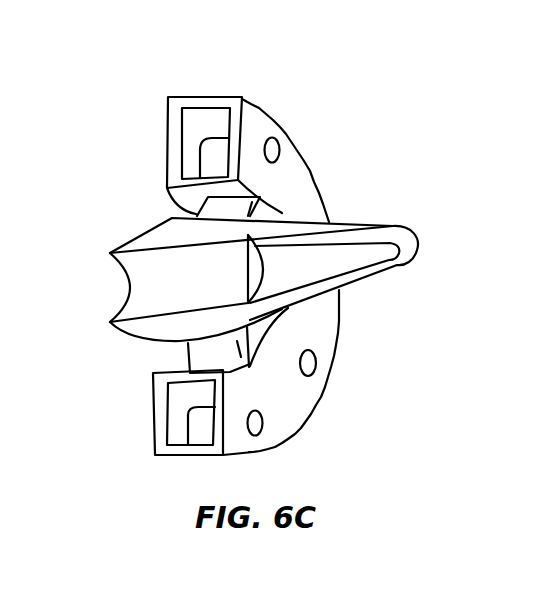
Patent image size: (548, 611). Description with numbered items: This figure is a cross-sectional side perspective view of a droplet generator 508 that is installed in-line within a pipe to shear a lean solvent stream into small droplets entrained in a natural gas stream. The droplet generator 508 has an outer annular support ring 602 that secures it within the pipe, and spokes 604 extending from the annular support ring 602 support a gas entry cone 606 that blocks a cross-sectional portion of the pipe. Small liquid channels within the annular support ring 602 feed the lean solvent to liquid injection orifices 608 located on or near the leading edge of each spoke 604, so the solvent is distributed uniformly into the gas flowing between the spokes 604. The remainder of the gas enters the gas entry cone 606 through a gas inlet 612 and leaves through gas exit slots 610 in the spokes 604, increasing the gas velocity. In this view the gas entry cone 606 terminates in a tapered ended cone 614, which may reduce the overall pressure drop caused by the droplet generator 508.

The droplet generator 508 is at (152, 70).
The outer annular support ring 602 is at (306, 423).
The spokes 604 is at (186, 350).
The gas entry cone 606 is at (122, 333).
The liquid injection orifices 608 is at (191, 213).
The gas exit slots 610 is at (260, 210).
The gas inlet 612 is at (161, 284).
The tapered ended cone 614 is at (372, 287).